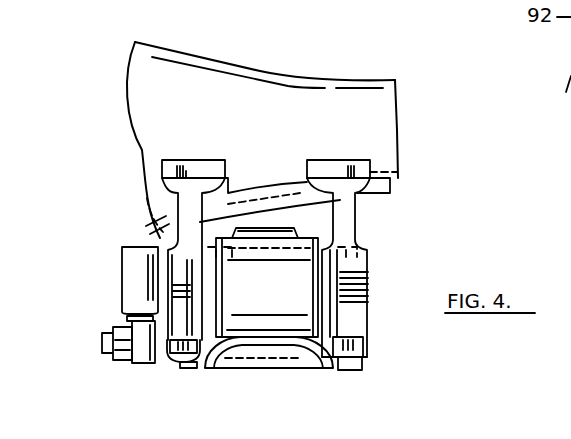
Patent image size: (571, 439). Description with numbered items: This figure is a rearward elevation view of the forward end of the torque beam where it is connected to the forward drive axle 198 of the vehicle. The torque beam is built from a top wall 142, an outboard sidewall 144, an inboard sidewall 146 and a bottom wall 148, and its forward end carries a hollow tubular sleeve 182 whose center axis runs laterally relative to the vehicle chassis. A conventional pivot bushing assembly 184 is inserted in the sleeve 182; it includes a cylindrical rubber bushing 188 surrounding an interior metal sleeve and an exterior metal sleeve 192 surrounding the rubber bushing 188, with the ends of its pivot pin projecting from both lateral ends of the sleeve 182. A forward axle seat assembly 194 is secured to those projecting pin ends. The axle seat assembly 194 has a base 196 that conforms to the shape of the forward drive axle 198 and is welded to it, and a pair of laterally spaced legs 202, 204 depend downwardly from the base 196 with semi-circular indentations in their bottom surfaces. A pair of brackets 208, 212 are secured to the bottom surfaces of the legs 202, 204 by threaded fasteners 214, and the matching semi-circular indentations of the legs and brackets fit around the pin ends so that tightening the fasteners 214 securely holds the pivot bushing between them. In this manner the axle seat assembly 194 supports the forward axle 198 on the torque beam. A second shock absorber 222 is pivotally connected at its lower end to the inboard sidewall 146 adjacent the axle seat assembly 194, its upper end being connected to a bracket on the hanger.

The forward drive axle 198 is at (176, 70).
The base 196 is at (240, 193).
The top wall 142 is at (275, 227).
The forward axle seat assembly 194 is at (320, 243).
The pivot bushing assembly 184 is at (362, 210).
The hollow tubular sleeve 182 is at (298, 287).
The leg 202 is at (368, 268).
The bracket 208 is at (360, 327).
The threaded fasteners 214 is at (368, 357).
The outboard sidewall 144 is at (335, 365).
The bottom wall 148 is at (280, 362).
The inboard sidewall 146 is at (200, 373).
The second shock absorber 222 is at (125, 260).
The leg 204 is at (187, 258).
The bracket 212 is at (140, 360).
The cylindrical rubber bushing 188 is at (210, 268).
The exterior metal sleeve 192 is at (185, 223).